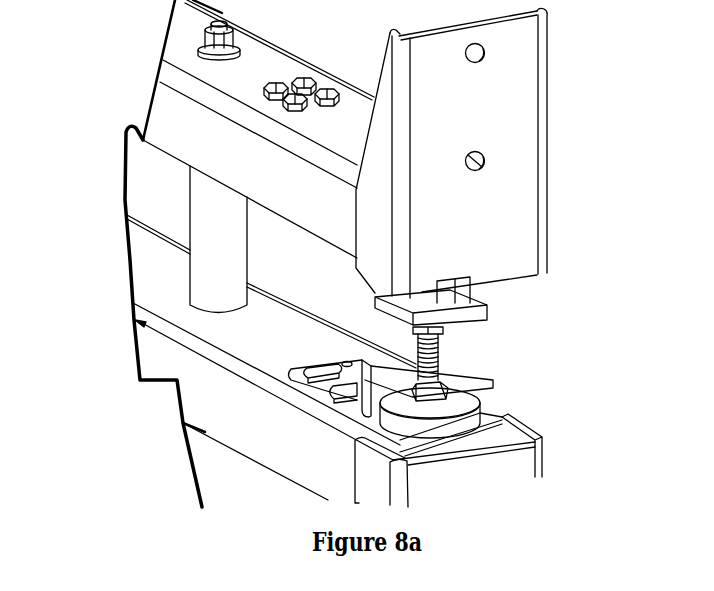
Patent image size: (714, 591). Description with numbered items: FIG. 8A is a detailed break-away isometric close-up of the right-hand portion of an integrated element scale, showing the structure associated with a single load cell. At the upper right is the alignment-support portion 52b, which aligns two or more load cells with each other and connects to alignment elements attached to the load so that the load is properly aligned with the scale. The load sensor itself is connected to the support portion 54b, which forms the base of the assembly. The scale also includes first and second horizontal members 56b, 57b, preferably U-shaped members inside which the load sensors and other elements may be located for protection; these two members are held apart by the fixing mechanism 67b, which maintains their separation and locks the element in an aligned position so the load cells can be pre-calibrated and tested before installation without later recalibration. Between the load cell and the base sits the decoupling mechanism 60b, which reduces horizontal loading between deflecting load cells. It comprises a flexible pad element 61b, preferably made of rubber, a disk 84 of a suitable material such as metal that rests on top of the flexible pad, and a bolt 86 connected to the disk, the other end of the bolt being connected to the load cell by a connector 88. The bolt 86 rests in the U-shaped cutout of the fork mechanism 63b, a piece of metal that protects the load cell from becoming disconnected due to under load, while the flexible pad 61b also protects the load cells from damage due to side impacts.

The alignment-support portion 52b is at (520, 158).
The support portion 54b is at (518, 458).
The first horizontal member 56b is at (261, 53).
The second horizontal member 57b is at (150, 292).
The decoupling mechanism 60b is at (542, 320).
The flexible pad element 61b is at (497, 419).
The fork mechanism 63b is at (470, 380).
The fixing mechanism 67b is at (188, 197).
The disk 84 is at (483, 411).
The bolt 86 is at (421, 362).
The connector 88 is at (487, 305).